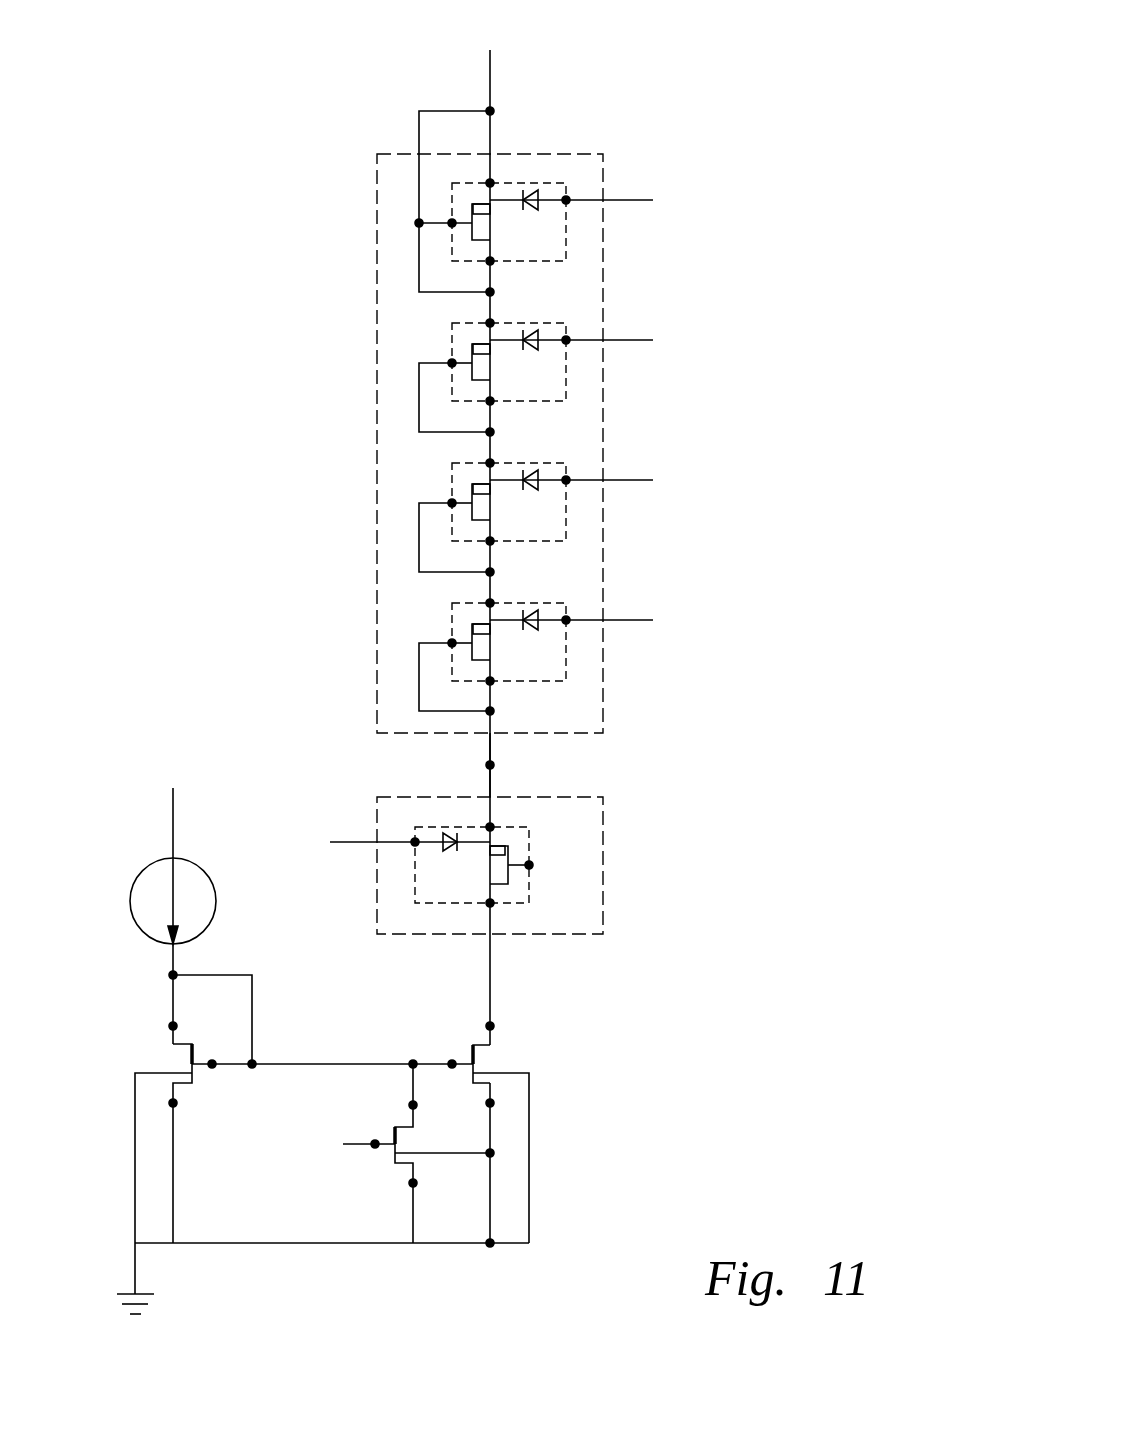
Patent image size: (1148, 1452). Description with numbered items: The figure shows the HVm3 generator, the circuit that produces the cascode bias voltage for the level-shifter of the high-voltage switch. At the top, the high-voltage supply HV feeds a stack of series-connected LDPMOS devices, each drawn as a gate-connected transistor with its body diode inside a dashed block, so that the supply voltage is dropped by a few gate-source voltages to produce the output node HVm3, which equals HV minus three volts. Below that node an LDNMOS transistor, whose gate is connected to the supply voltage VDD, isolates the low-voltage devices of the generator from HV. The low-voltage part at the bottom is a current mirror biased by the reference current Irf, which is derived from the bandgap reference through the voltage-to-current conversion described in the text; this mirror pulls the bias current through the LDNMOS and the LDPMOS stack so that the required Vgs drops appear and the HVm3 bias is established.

The high voltage supply HV is at (490, 62).
The series-connected LDPMOS devices LDPMOS is at (515, 415).
The HVm3 node HVm3 is at (490, 765).
The supply voltage VDD is at (529, 865).
The reference current Irf is at (193, 881).
The LDNMOS isolation transistor LDNMOS is at (474, 895).